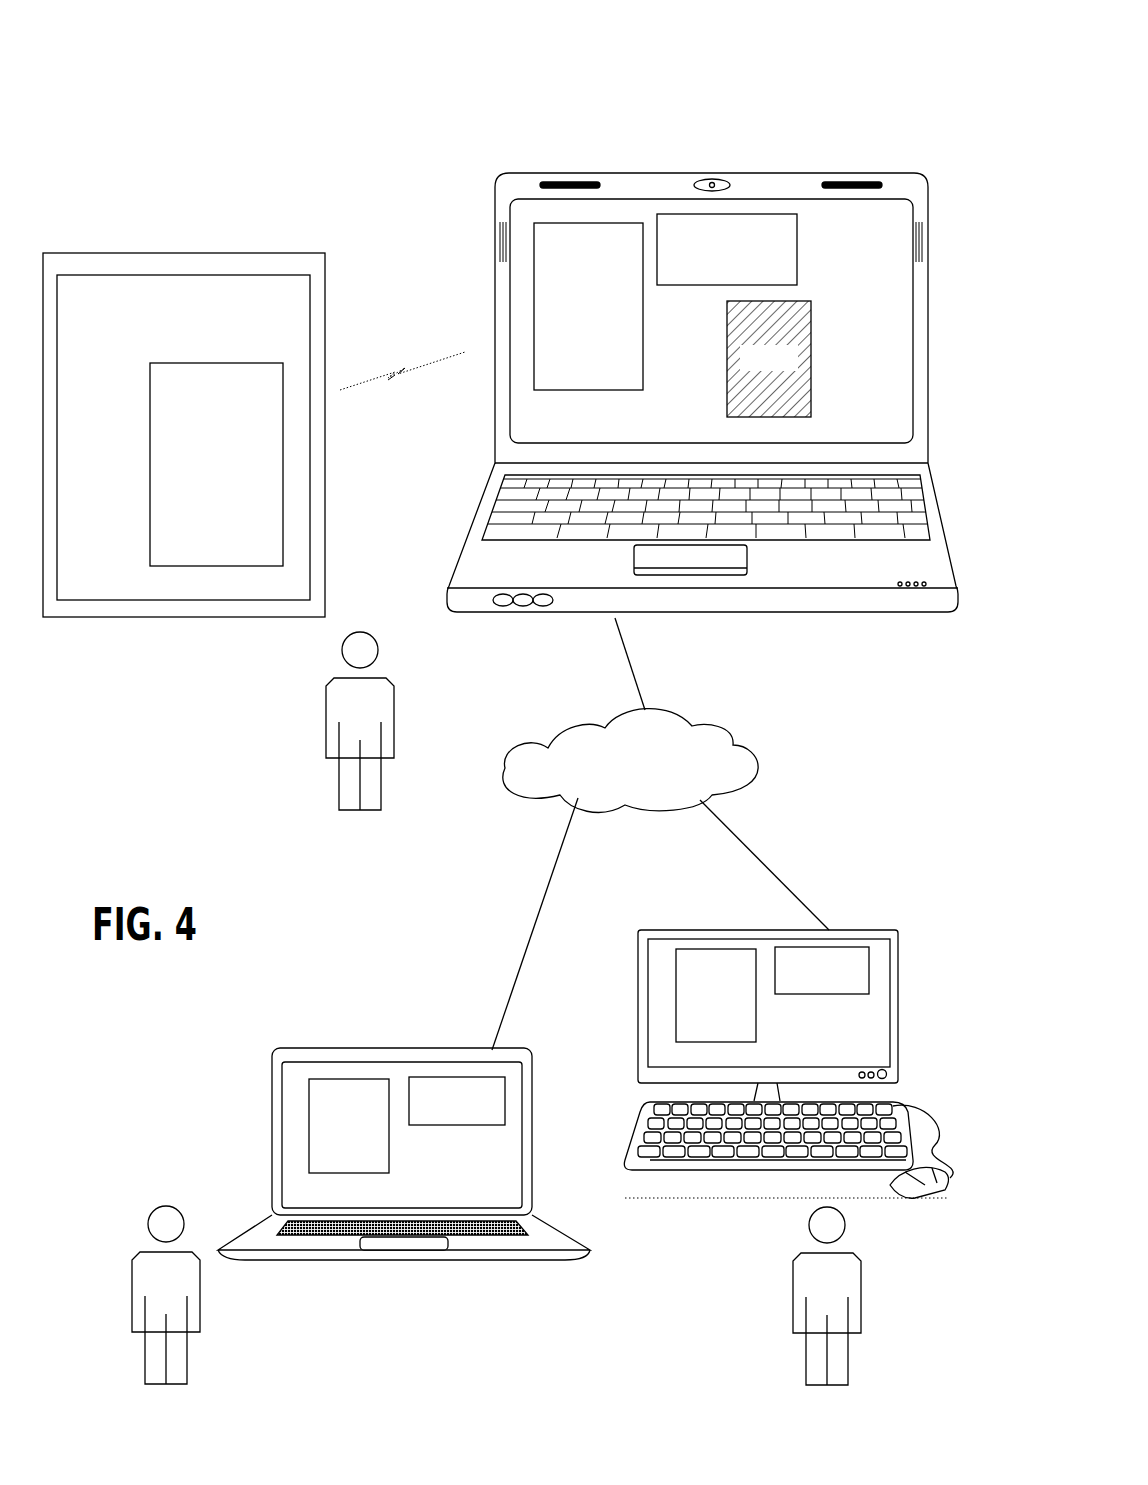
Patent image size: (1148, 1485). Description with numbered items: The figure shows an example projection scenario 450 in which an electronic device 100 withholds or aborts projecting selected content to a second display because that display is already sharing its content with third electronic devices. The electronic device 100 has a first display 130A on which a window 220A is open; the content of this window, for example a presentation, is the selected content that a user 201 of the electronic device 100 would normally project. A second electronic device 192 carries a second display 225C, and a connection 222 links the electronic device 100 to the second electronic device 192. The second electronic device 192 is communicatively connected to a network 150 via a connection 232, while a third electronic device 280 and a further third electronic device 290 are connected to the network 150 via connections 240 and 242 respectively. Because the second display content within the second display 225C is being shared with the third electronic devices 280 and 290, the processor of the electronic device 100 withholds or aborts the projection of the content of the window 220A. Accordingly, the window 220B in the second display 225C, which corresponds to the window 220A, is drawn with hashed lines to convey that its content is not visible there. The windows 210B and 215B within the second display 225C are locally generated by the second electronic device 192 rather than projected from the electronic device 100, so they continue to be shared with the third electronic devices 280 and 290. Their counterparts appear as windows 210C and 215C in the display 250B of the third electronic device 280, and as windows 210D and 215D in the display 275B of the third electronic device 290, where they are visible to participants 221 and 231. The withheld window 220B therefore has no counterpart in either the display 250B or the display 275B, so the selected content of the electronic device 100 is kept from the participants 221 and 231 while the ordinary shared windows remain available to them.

The system environment 450 is at (232, 54).
The electronic device 100 is at (173, 253).
The first display 130A is at (262, 274).
The window 220A is at (245, 482).
The wireless connection 222 is at (385, 372).
The second electronic device 192 is at (495, 233).
The second display 225C is at (808, 200).
The window 210B is at (616, 318).
The window 215B is at (755, 259).
The window 220B is at (769, 359).
The user 201 is at (382, 711).
The participant 221 is at (188, 1285).
The participant 231 is at (849, 1286).
The network 150 is at (654, 774).
The connection 232 is at (633, 672).
The connection 240 is at (560, 852).
The connection 242 is at (722, 822).
The display 250B is at (425, 1056).
The third electronic device 280 is at (282, 1110).
The window 210C is at (378, 1136).
The window 215C is at (486, 1112).
The display 275B is at (697, 930).
The third electronic device 290 is at (646, 986).
The window 210D is at (746, 1006).
The window 215D is at (852, 982).